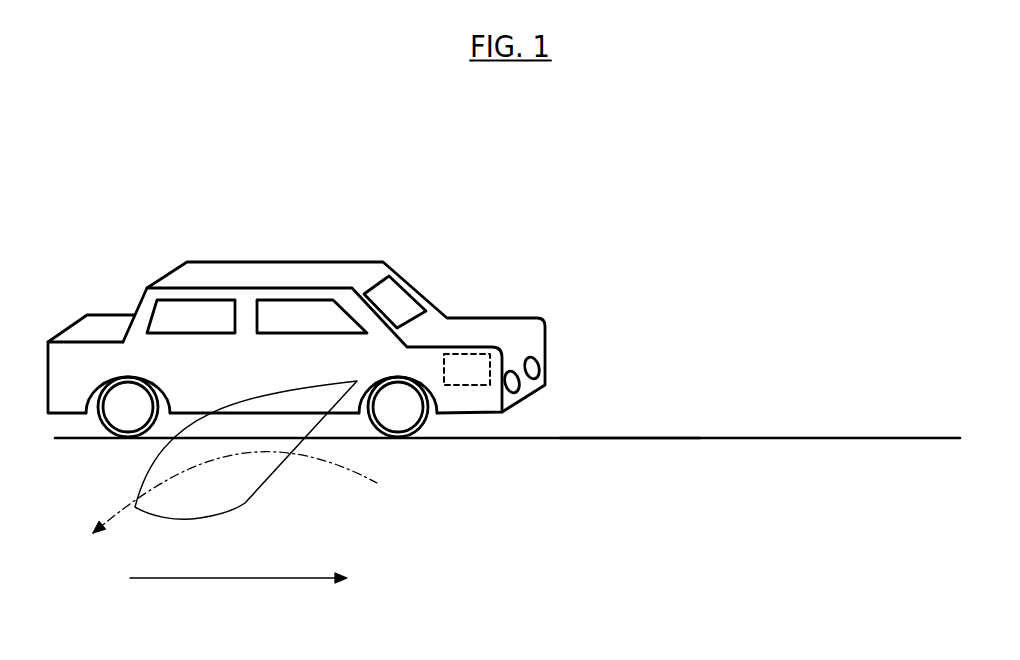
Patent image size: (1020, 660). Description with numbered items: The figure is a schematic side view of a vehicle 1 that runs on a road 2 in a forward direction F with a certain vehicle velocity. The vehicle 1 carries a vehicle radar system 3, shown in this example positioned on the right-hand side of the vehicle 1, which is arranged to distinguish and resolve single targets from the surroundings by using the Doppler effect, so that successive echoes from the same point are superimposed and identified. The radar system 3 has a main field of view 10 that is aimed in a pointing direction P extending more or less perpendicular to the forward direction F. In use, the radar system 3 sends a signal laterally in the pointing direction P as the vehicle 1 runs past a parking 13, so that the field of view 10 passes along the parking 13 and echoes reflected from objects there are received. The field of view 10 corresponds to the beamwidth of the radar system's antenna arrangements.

The vehicle 1 is at (360, 200).
The road 2 is at (612, 438).
The vehicle radar system 3 is at (472, 350).
The main field of view 10 is at (236, 486).
The parking 13 is at (605, 498).
The pointing direction P is at (249, 492).
The forward direction F is at (238, 562).